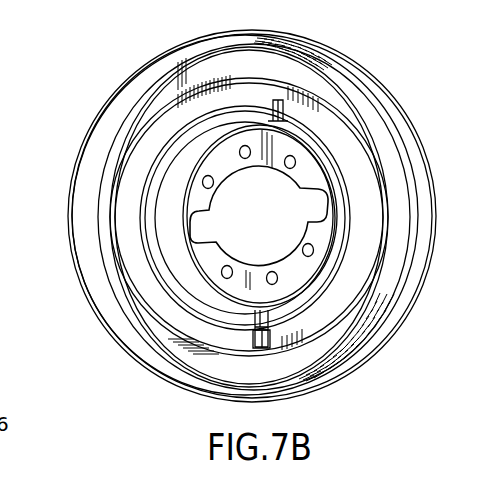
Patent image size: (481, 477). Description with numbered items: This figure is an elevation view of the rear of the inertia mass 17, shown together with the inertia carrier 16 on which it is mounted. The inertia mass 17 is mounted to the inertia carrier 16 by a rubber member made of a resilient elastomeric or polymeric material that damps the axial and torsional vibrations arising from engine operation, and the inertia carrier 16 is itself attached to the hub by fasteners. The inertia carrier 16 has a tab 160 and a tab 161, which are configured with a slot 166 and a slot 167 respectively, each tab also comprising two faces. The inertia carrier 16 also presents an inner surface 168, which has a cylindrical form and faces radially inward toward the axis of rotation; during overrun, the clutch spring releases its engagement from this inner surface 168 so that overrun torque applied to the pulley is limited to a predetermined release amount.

The inertia carrier 16 is at (180, 260).
The inertia mass 17 is at (385, 90).
The tab 160 is at (257, 97).
The tab 161 is at (257, 327).
The slot 166 is at (283, 102).
The slot 167 is at (277, 327).
The inner surface 168 is at (130, 240).